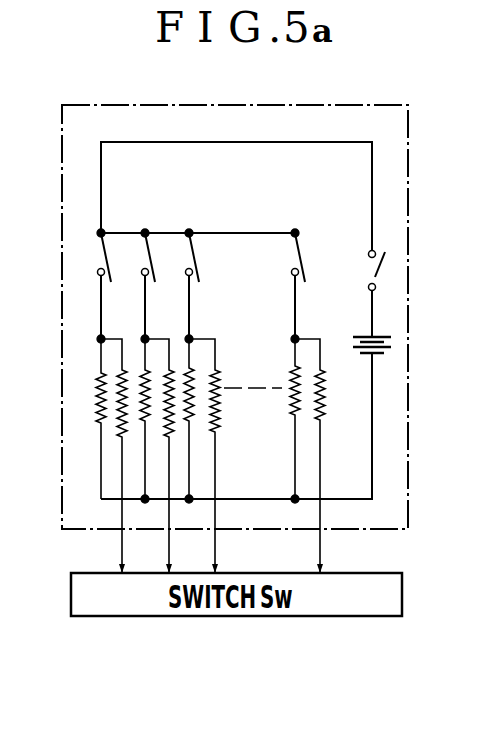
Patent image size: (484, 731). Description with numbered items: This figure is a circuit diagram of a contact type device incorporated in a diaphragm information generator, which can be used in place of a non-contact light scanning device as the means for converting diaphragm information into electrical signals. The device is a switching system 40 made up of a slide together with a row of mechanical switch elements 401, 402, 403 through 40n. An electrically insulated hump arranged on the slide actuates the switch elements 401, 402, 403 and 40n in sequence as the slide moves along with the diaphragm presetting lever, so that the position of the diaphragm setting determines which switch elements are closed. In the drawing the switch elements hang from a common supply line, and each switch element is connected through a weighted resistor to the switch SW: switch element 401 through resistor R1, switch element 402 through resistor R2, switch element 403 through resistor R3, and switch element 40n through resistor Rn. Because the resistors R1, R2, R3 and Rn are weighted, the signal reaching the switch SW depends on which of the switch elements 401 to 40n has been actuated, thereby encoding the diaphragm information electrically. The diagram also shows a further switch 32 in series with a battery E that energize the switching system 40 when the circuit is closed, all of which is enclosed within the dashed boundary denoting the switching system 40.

The switching system 40 is at (338, 118).
The mechanical switch element 401 is at (106, 256).
The mechanical switch element 402 is at (151, 256).
The mechanical switch element 403 is at (194, 256).
The mechanical switch element 40n is at (298, 258).
The switch 32 is at (381, 273).
The battery E is at (388, 336).
The resistor R1 is at (126, 454).
The resistor R2 is at (170, 454).
The resistor R3 is at (215, 454).
The resistor Rn is at (324, 454).